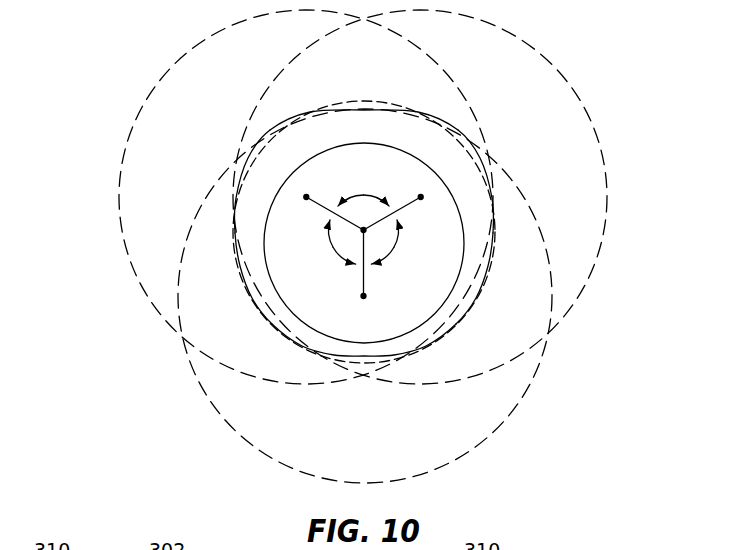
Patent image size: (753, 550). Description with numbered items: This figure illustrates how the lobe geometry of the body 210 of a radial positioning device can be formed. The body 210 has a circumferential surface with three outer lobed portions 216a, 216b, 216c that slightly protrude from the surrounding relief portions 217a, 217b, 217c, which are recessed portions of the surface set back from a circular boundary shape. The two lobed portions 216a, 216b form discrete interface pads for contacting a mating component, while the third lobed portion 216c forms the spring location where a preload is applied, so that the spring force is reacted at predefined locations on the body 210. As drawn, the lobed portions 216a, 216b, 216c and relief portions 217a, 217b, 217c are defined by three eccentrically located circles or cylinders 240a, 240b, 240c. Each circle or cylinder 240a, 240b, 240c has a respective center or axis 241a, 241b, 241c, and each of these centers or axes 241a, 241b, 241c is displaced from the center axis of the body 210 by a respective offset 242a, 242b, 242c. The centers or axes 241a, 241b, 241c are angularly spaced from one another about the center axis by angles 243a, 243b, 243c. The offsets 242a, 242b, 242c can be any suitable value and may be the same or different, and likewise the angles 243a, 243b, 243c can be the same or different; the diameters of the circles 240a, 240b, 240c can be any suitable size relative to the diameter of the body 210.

The body 210 is at (345, 96).
The outer lobed portion 216a is at (246, 150).
The outer lobed portion 216b is at (452, 156).
The outer lobed portion 216c is at (371, 352).
The relief portion 217a is at (249, 289).
The relief portion 217b is at (367, 101).
The relief portion 217c is at (463, 283).
The circle or cylinder 240a is at (118, 133).
The circle or cylinder 240b is at (590, 133).
The circle or cylinder 240c is at (465, 441).
The center or axis 241a is at (298, 189).
The center or axis 241b is at (413, 189).
The center or axis 241c is at (356, 289).
The offset 242a is at (319, 203).
The offset 242b is at (392, 204).
The offset 242c is at (353, 287).
The angle 243a is at (324, 238).
The angle 243b is at (377, 198).
The angle 243c is at (386, 241).